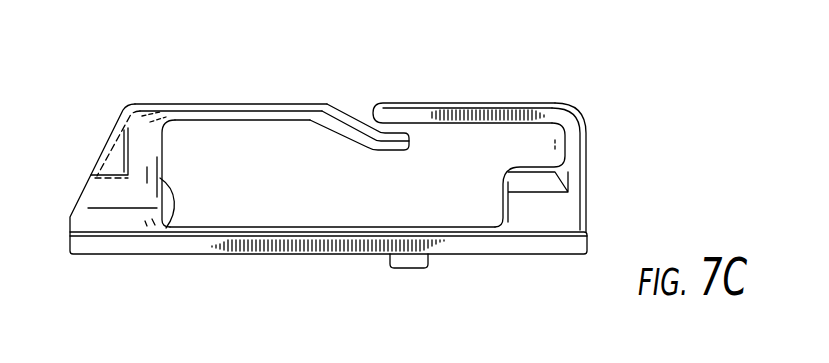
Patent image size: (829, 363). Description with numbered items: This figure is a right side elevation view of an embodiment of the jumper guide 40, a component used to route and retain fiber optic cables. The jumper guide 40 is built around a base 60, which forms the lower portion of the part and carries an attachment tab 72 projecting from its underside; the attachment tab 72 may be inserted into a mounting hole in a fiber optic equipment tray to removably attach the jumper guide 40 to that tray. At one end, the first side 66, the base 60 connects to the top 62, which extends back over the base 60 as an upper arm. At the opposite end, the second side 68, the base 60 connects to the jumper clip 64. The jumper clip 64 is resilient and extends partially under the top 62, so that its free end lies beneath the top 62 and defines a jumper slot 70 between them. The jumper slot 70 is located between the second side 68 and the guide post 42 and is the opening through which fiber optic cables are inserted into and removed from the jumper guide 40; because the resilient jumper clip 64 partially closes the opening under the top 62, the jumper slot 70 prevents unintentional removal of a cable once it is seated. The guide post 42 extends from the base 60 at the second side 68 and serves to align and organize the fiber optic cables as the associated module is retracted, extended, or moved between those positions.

The jumper guide 40 is at (569, 76).
The guide post 42 is at (166, 228).
The base 60 is at (530, 255).
The top 62 is at (458, 100).
The jumper clip 64 is at (245, 102).
The first side 66 is at (588, 173).
The second side 68 is at (90, 178).
The jumper slot 70 is at (360, 112).
The attachment tab 72 is at (412, 268).